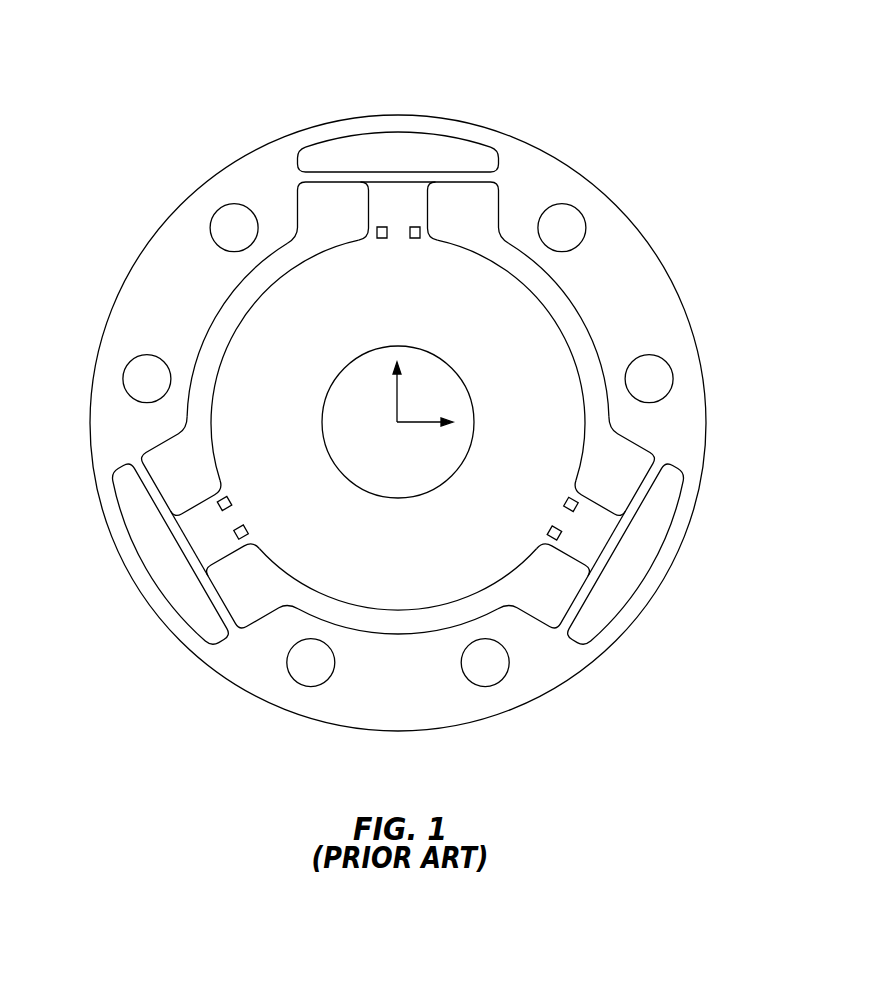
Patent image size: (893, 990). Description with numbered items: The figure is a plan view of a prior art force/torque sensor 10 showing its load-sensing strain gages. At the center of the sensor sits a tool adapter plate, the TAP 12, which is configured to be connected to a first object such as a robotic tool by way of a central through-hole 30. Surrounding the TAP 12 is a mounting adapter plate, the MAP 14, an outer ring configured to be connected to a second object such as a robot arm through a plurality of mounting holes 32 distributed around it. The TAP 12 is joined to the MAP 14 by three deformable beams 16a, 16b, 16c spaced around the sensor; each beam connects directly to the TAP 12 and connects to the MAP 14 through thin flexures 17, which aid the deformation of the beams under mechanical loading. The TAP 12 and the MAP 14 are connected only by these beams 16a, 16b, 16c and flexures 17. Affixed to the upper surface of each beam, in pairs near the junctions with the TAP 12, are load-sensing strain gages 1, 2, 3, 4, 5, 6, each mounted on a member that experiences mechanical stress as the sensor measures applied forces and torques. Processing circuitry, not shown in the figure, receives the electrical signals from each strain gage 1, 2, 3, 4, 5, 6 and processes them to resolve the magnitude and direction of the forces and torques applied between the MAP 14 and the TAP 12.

The F/T sensor 10 is at (200, 90).
The TAP 12 is at (476, 526).
The MAP 14 is at (632, 306).
The deformable beam 16a is at (402, 208).
The deformable beam 16b is at (585, 540).
The deformable beam 16c is at (213, 530).
The thin flexures 17 is at (337, 182).
The through-hole 30 is at (443, 395).
The mounting holes 32 is at (649, 378).
The load-sensing strain gage 1 is at (382, 253).
The load-sensing strain gage 2 is at (414, 253).
The load-sensing strain gage 3 is at (563, 493).
The load-sensing strain gage 4 is at (546, 521).
The load-sensing strain gage 5 is at (250, 521).
The load-sensing strain gage 6 is at (231, 491).